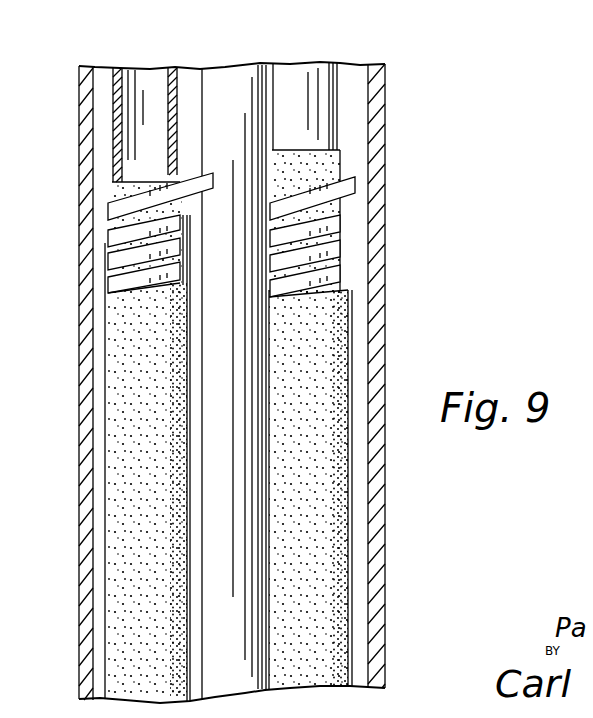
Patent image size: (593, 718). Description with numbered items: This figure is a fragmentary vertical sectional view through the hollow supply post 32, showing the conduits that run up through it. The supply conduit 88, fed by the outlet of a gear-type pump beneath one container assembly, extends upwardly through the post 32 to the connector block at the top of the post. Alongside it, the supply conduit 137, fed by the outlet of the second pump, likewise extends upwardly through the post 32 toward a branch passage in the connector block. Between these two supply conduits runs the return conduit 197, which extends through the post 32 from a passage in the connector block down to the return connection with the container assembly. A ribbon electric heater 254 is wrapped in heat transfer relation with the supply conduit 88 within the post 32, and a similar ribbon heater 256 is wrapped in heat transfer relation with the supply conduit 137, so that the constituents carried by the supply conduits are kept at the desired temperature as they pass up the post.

The hollow post 32 is at (378, 337).
The supply conduit 88 is at (297, 80).
The supply conduit 137 is at (150, 90).
The conduit 197 is at (217, 93).
The ribbon electric heater 254 is at (352, 182).
The ribbon heater 256 is at (123, 208).